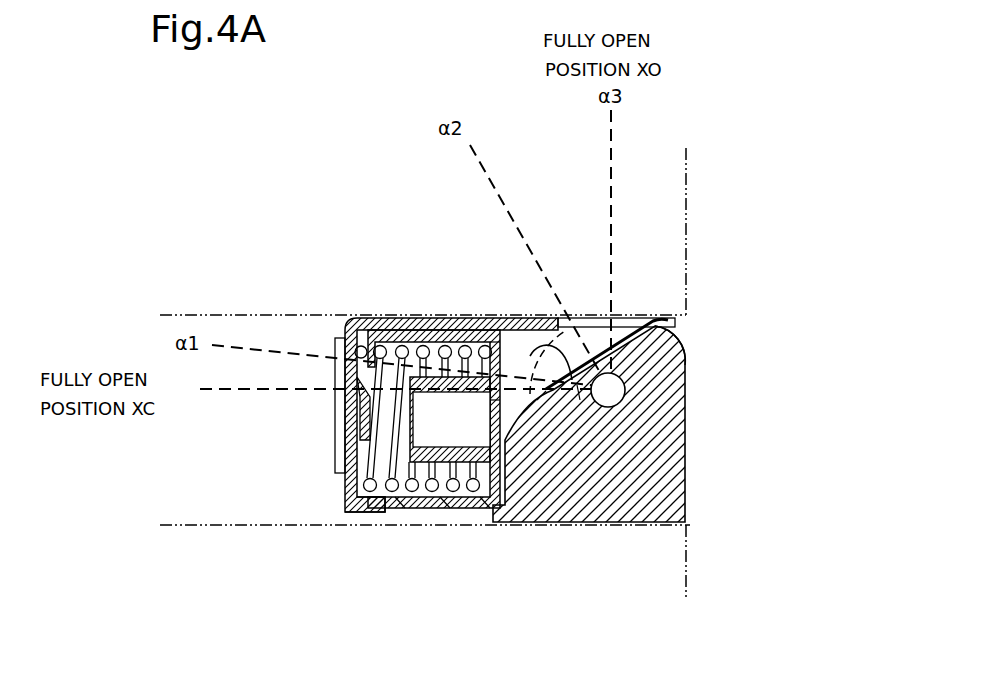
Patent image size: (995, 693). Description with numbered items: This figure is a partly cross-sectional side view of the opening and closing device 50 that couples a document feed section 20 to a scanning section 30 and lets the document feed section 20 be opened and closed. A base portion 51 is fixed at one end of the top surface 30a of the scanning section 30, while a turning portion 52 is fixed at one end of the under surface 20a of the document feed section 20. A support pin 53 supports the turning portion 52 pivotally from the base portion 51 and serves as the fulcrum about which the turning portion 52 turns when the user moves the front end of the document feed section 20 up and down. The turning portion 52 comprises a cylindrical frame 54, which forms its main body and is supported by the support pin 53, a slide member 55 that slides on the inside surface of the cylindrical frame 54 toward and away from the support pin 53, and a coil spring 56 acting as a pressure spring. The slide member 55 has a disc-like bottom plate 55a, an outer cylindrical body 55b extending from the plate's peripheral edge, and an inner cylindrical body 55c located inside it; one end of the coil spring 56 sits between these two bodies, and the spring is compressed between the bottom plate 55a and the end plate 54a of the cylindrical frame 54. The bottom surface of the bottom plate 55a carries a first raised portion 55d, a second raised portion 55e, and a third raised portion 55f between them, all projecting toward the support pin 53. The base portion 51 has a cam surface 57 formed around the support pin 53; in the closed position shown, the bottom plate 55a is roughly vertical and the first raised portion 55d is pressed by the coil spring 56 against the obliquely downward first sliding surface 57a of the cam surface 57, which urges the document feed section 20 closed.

The document feed section 20 is at (730, 211).
The under surface of the document feed section 20a is at (185, 312).
The scanning section 30 is at (690, 573).
The top surface of the scanning section 30a is at (222, 527).
The opening and closing device 50 is at (712, 158).
The base portion 51 is at (690, 432).
The turning portion 52 is at (388, 312).
The support pin 53 is at (673, 365).
The cylindrical frame 54 is at (485, 315).
The end plate of the cylindrical frame 54a is at (345, 494).
The slide member 55 is at (440, 315).
The bottom plate 55a is at (490, 508).
The outer cylindrical body 55b is at (402, 510).
The inner cylindrical body 55c is at (447, 508).
The first raised portion 55d is at (498, 400).
The second raised portion 55e is at (490, 395).
The third raised portion 55f is at (580, 400).
The coil spring 56 is at (345, 447).
The cam surface 57 is at (660, 307).
The first sliding surface 57a is at (537, 400).